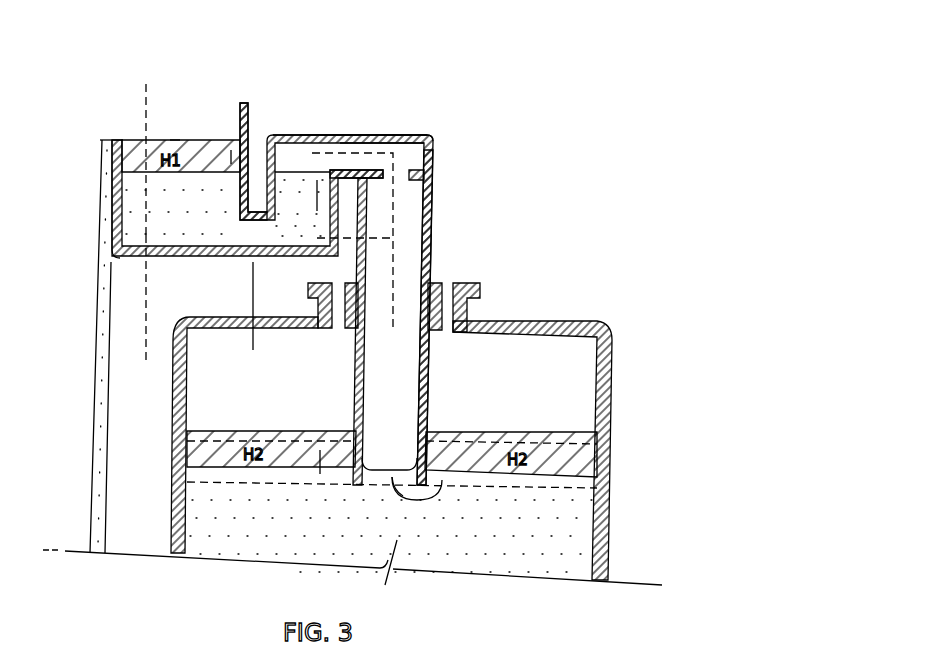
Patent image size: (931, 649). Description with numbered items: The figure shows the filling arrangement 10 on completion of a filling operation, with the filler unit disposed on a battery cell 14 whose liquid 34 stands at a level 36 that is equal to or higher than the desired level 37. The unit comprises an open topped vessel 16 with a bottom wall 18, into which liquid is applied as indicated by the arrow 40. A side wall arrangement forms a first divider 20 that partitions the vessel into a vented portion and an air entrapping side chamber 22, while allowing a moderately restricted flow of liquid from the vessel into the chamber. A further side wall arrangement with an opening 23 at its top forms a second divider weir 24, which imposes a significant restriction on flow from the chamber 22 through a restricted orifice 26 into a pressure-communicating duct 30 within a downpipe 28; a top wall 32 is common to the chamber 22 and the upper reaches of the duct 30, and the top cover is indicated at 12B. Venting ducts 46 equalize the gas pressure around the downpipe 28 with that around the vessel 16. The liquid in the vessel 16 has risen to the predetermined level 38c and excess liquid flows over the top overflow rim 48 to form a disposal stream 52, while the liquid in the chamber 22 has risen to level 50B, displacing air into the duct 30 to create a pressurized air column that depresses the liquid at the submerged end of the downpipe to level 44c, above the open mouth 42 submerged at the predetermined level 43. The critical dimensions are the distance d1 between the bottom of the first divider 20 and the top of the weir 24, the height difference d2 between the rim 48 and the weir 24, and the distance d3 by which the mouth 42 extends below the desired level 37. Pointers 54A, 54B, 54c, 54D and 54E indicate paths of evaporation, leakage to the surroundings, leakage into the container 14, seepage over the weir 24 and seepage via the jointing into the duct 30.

The filling arrangement 10 is at (498, 210).
The top cover 12B is at (360, 115).
The battery cell 14 is at (646, 478).
The open topped vessel 16 is at (112, 205).
The bottom wall 18 is at (200, 255).
The first divider 20 is at (257, 213).
The side chamber 22 is at (290, 150).
The opening 23 is at (340, 134).
The second divider weir 24 is at (355, 162).
The restricted opening or orifice 26 is at (406, 168).
The downpipe 28 is at (428, 357).
The pressure-communicating duct 30 is at (403, 382).
The top wall 32 is at (360, 135).
The liquid 34 is at (200, 503).
The level 36 is at (283, 432).
The desired level 37 is at (200, 440).
The predetermined desired level 38c is at (175, 140).
The arrow indicating liquid flow 40 is at (208, 128).
The open mouth 42 is at (440, 497).
The predetermined level 43 is at (240, 483).
The level 44c is at (393, 470).
The venting ducts 46 is at (455, 285).
The top overflow rim or weir 48 is at (103, 141).
The level 50B is at (298, 173).
The disposal stream 52 is at (101, 400).
The pointer 54A is at (145, 115).
The pointer 54B is at (145, 322).
The pointer 54c is at (253, 275).
The pointer 54D is at (397, 206).
The pointer 54E is at (393, 286).
The distance d1 is at (318, 196).
The difference d2 is at (227, 140).
The distance d3 is at (307, 455).